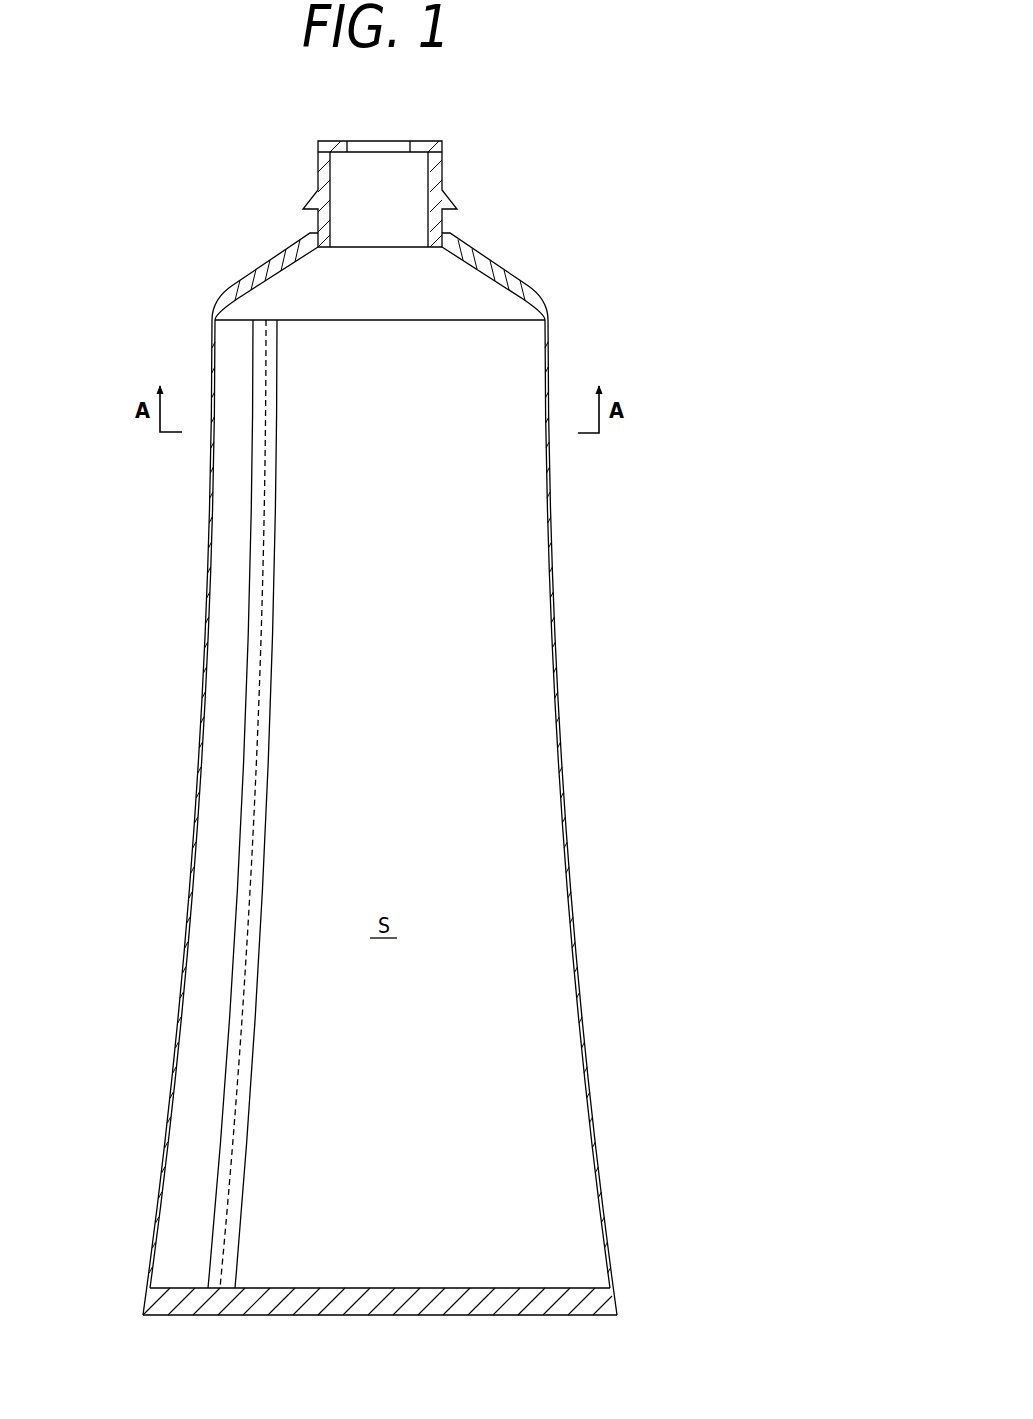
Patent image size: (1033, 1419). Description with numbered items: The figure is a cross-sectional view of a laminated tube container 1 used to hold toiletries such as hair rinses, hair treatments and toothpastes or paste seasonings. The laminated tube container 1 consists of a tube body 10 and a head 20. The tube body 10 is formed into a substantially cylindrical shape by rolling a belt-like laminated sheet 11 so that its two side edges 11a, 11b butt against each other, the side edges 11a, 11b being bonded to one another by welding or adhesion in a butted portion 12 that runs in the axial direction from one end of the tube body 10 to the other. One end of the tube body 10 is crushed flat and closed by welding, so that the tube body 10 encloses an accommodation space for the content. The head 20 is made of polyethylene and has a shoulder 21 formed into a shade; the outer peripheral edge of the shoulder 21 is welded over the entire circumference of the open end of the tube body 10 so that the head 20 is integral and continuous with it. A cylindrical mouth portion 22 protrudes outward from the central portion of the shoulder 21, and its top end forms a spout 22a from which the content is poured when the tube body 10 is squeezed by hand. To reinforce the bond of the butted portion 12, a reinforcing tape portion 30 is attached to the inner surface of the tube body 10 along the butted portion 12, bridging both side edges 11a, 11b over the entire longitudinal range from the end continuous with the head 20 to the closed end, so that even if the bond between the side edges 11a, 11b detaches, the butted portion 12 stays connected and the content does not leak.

The laminated tube container 1 is at (453, 702).
The tube body 10 is at (409, 817).
The laminated sheet 11 is at (570, 881).
The side edge 11a is at (262, 617).
The side edge 11b is at (261, 667).
The butted portion 12 is at (265, 497).
The head 20 is at (406, 246).
The shoulder 21 is at (474, 253).
The mouth portion 22 is at (344, 168).
The spout 22a is at (383, 146).
The reinforcing tape portion 30 is at (261, 804).